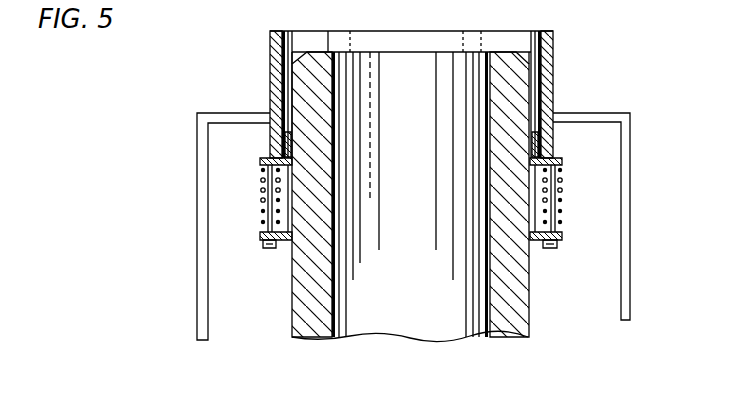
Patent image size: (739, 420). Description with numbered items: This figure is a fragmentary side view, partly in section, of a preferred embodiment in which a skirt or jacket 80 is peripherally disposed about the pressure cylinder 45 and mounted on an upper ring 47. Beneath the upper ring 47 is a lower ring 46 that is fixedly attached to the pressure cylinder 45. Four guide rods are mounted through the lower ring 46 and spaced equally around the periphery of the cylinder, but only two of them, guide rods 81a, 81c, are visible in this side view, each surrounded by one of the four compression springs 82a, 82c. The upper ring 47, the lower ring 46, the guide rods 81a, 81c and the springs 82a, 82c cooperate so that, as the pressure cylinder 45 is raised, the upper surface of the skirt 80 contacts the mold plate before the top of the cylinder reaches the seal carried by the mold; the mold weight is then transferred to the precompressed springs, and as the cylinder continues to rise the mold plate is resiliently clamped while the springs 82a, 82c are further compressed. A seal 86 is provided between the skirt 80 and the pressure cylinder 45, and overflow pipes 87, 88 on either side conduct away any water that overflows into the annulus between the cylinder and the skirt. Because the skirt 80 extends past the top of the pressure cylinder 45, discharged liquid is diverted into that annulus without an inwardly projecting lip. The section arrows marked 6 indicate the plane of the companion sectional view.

The pressure cylinder 45 is at (528, 322).
The lower ring 46 is at (263, 247).
The upper ring 47 is at (556, 158).
The skirt 80 is at (270, 68).
The guide rod 81a is at (271, 207).
The guide rod 81c is at (561, 226).
The compression spring 82a is at (282, 199).
The compression spring 82c is at (560, 207).
The seal 86 is at (530, 139).
The overflow pipe 87 is at (633, 253).
The overflow pipe 88 is at (197, 241).
The section line 6- 6 is at (218, 143).